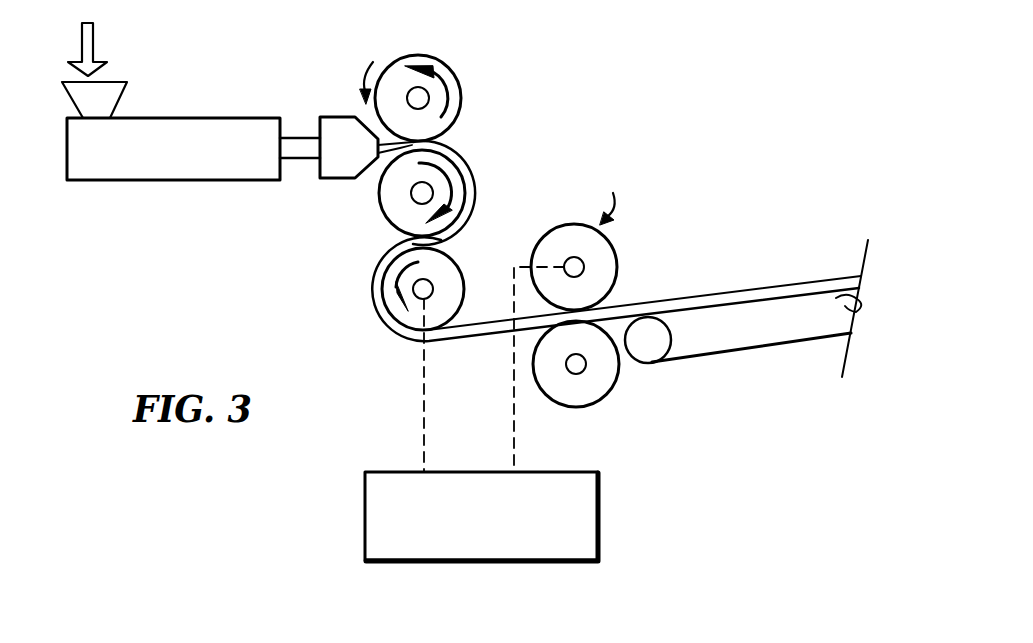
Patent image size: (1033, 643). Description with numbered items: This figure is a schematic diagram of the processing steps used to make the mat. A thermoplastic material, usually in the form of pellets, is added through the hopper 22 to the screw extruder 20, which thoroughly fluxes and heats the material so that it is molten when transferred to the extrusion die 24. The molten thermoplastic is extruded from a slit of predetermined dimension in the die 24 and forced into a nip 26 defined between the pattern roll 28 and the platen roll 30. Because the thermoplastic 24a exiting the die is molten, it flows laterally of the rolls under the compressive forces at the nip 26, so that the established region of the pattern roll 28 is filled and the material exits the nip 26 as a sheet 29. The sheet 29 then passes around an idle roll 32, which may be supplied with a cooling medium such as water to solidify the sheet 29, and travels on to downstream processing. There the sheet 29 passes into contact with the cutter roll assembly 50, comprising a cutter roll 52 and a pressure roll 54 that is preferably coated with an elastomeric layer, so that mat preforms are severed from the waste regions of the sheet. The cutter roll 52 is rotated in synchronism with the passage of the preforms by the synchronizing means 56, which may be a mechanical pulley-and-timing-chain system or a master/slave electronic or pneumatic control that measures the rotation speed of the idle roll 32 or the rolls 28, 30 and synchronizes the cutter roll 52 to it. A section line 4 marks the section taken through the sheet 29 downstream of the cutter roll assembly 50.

The section line 4- 4 is at (646, 262).
The screw extruder 20 is at (209, 152).
The hopper 22 is at (122, 93).
The extrusion die 24 is at (366, 151).
The molten thermoplastic 24a is at (377, 160).
The nip 26 is at (379, 67).
The pattern roll 28 is at (441, 62).
The sheet 29 is at (461, 157).
The platen roll 30 is at (383, 212).
The idle roll 32 is at (463, 268).
The cutter roll assembly 50 is at (596, 201).
The cutter roll 52 is at (532, 246).
The pressure roll 54 is at (599, 387).
The synchronizing means 56 is at (365, 503).